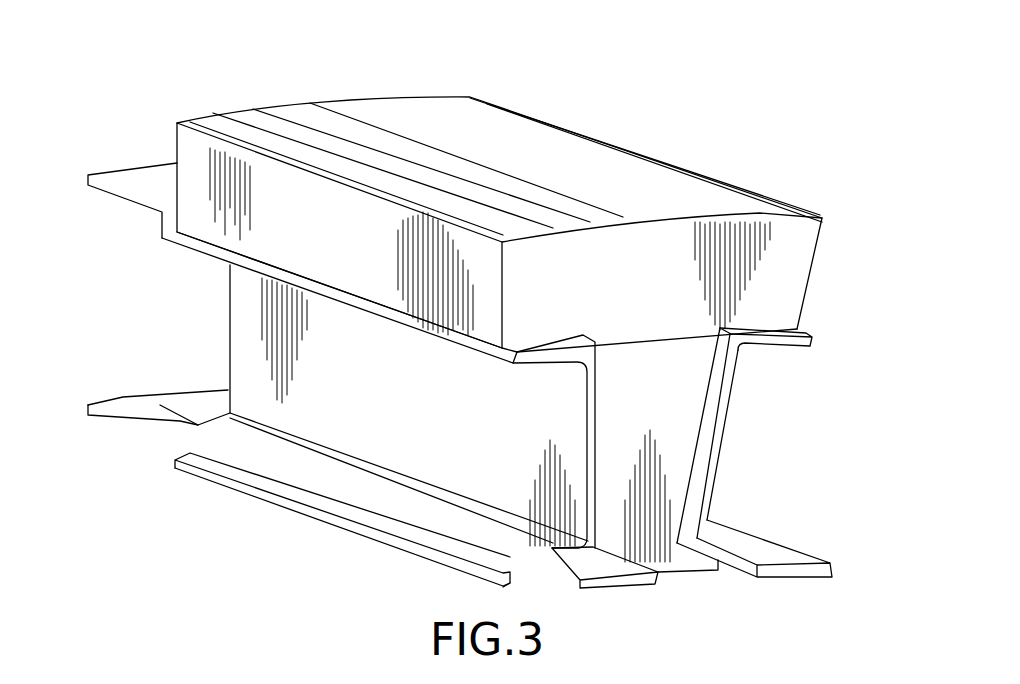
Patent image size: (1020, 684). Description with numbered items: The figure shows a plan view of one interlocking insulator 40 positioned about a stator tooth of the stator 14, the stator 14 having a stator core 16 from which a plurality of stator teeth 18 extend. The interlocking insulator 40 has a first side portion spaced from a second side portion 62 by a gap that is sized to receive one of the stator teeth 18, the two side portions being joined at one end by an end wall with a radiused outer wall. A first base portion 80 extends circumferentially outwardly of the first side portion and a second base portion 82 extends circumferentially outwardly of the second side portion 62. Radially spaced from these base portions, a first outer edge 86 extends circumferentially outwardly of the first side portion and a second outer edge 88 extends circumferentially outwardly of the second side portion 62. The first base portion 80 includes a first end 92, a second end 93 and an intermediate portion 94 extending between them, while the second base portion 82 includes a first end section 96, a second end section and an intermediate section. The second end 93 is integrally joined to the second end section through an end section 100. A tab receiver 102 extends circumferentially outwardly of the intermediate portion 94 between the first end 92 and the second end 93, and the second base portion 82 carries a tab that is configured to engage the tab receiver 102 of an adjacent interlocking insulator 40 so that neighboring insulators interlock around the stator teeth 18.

The stator 14 is at (296, 80).
The stator core 16 is at (615, 190).
The stator teeth 18 is at (652, 397).
The interlocking insulator 40 is at (211, 328).
The second side portion 62 is at (713, 452).
The first base portion 80 is at (397, 497).
The second base portion 82 is at (732, 522).
The first outer edge 86 is at (413, 323).
The second outer edge 88 is at (768, 342).
The first end 92 is at (623, 567).
The second end 93 is at (133, 410).
The intermediate portion 94 is at (280, 453).
The first end section 96 is at (797, 558).
The end section 100 is at (195, 400).
The tab receiver 102 is at (455, 553).